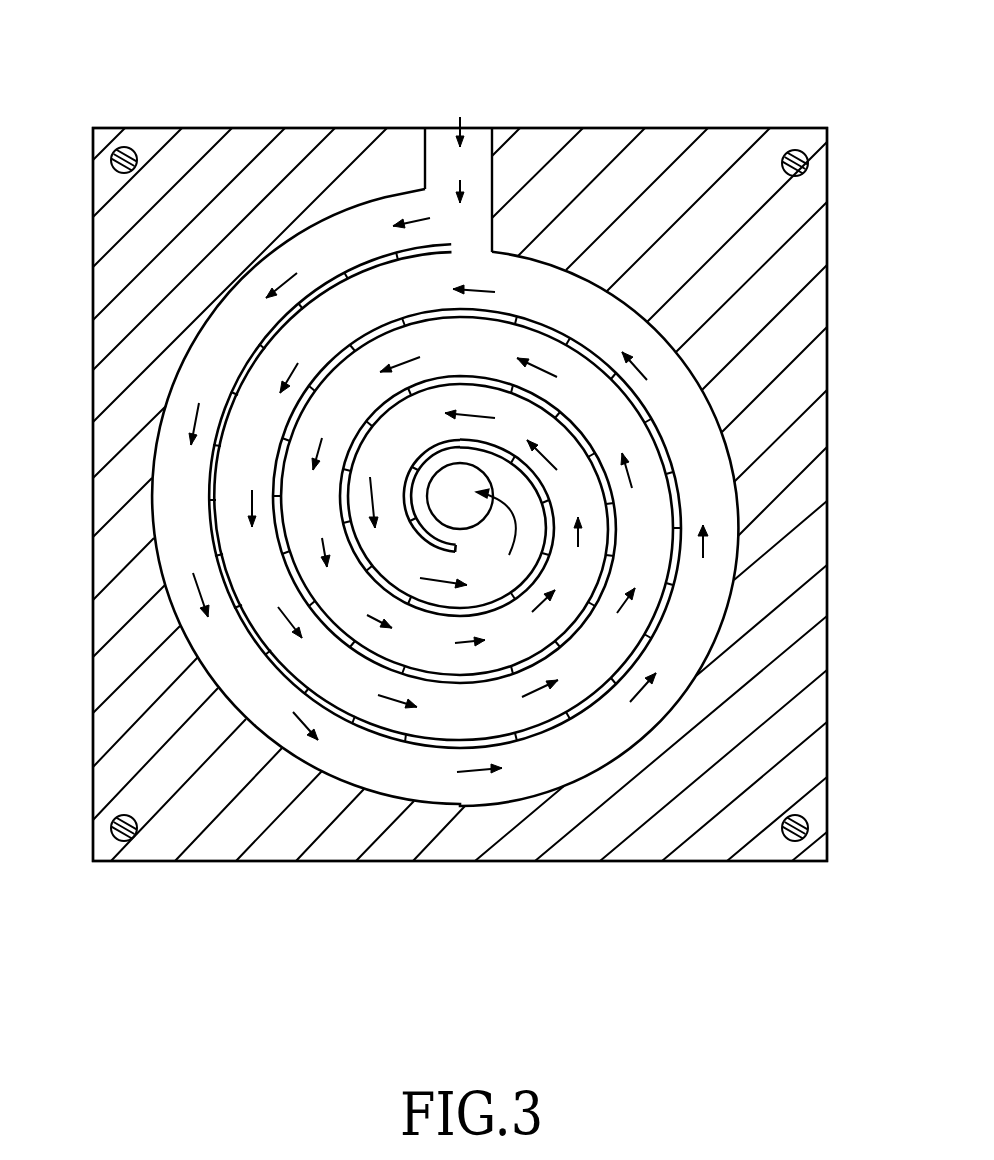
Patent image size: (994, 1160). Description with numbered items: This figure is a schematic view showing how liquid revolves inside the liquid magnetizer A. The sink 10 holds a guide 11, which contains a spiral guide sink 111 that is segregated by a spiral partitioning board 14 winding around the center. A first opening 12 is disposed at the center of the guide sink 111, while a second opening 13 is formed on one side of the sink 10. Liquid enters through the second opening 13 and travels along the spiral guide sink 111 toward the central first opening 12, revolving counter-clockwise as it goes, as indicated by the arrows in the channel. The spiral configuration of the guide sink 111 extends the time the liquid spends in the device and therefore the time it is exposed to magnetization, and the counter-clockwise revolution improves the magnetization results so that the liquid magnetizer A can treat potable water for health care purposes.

The liquid magnetizer A is at (746, 126).
The sink 10 is at (228, 129).
The guide 11 is at (426, 800).
The spiral guide sink 111 is at (232, 524).
The first opening 12 is at (457, 495).
The second opening 13 is at (447, 138).
The spiral partitioning board 14 is at (590, 455).